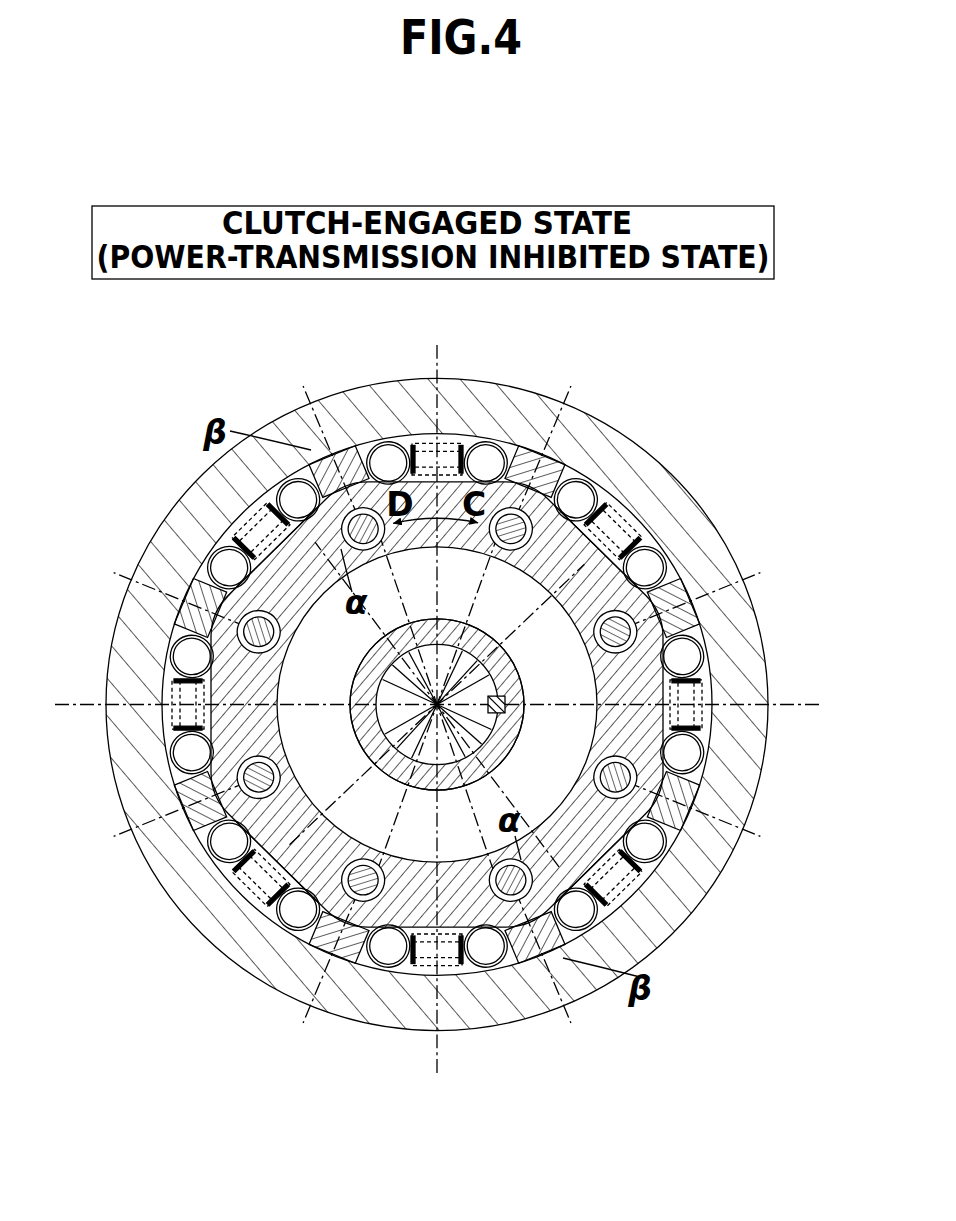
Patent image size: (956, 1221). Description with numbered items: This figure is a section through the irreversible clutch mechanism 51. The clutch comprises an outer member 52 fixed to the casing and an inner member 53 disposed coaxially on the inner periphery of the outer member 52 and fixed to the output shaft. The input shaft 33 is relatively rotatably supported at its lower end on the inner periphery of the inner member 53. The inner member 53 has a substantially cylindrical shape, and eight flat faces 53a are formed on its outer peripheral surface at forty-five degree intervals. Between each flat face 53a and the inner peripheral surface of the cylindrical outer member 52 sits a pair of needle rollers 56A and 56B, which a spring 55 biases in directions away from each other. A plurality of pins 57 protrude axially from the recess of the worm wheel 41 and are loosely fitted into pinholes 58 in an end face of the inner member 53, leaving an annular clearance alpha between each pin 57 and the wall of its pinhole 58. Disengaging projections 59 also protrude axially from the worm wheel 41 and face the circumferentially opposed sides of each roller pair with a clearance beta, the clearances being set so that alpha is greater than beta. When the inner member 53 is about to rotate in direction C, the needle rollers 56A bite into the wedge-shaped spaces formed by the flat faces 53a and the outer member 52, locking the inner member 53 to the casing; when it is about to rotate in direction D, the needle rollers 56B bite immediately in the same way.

The input shaft 33 is at (382, 748).
The worm wheel 41 is at (466, 795).
The irreversible clutch mechanism 51 is at (692, 538).
The outer member 52 is at (684, 479).
The inner member 53 is at (521, 578).
The flat face 53a is at (252, 510).
The spring 55 is at (485, 445).
The needle roller 56A is at (385, 452).
The needle roller 56B is at (500, 437).
The pin 57 is at (383, 534).
The pinhole 58 is at (500, 541).
The disengaging projection 59 is at (324, 465).